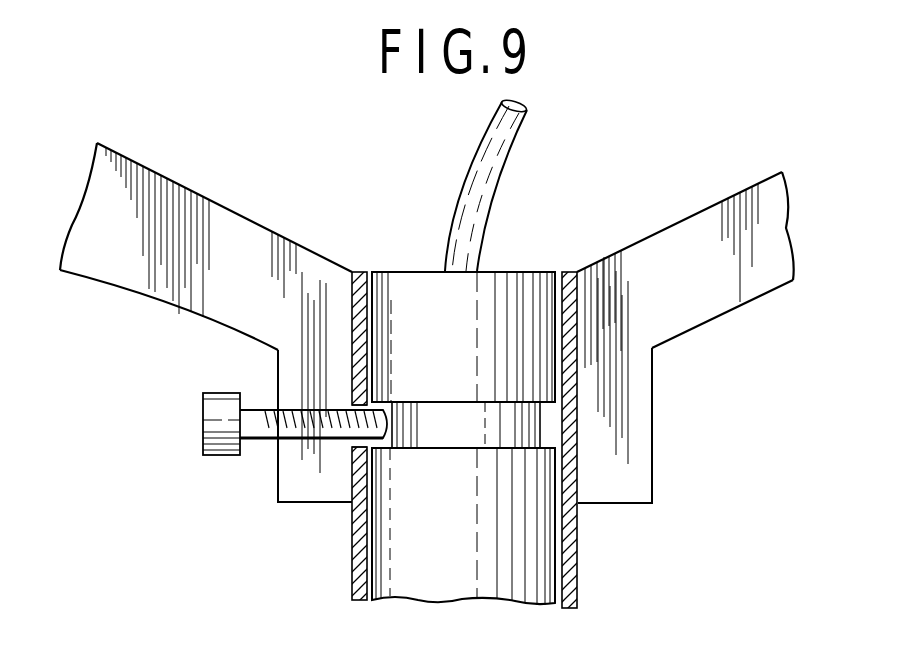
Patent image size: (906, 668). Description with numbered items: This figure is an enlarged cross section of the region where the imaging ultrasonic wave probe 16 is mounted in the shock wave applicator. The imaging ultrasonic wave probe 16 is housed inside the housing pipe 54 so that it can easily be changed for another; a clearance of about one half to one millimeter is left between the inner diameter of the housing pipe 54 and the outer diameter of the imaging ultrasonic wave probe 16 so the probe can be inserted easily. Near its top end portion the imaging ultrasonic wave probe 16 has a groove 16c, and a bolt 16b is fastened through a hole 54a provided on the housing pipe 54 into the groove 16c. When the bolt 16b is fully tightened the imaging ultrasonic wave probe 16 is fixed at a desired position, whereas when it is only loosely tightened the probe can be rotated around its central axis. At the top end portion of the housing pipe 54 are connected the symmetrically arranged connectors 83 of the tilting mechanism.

The imaging ultrasonic wave probe 16 is at (517, 272).
The bolt 16b is at (218, 456).
The groove 16c is at (538, 430).
The housing pipe 54 is at (580, 533).
The hole 54a is at (353, 449).
The connectors 83 is at (150, 295).